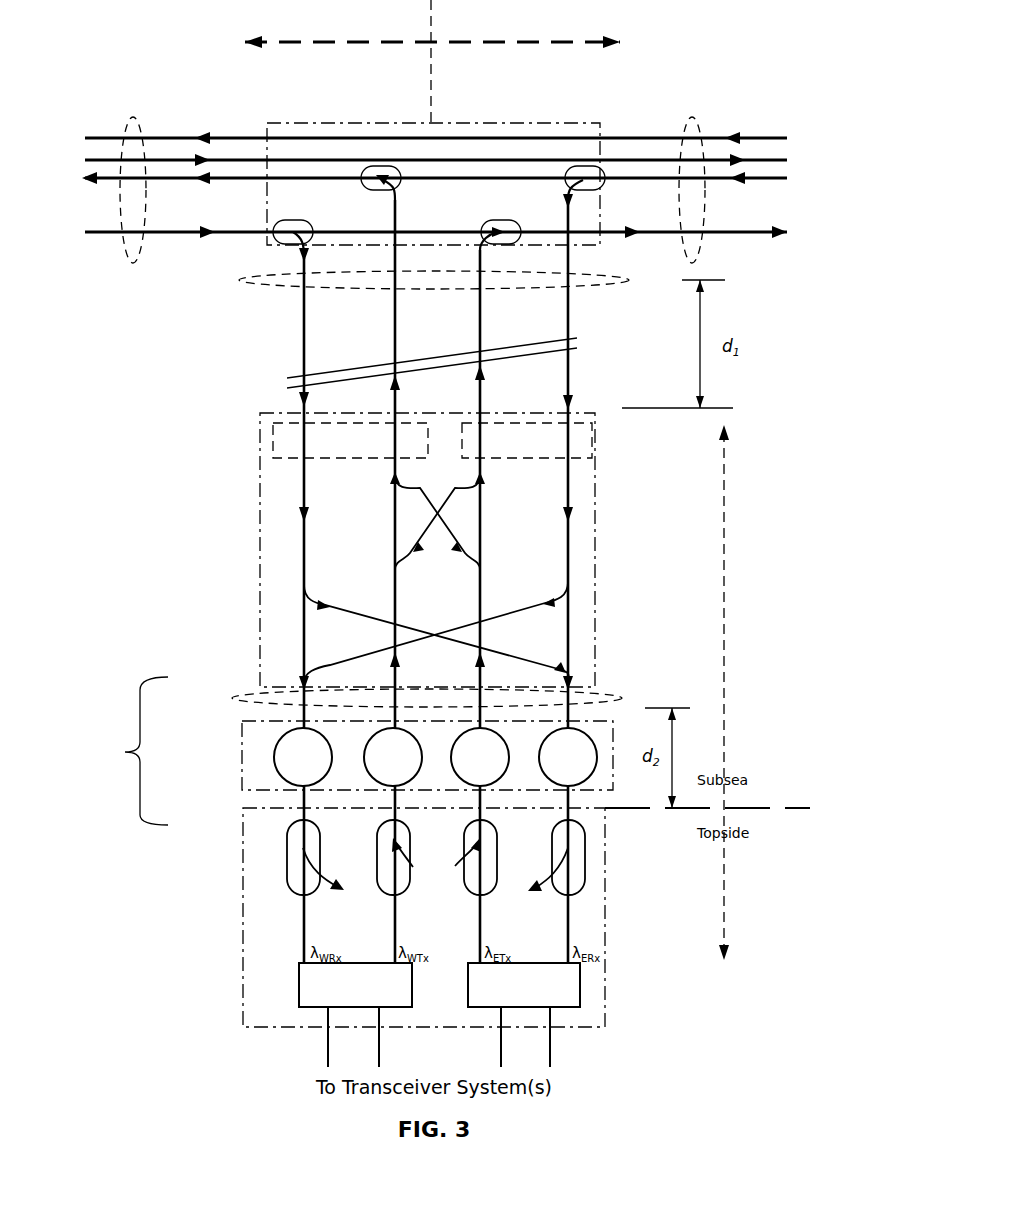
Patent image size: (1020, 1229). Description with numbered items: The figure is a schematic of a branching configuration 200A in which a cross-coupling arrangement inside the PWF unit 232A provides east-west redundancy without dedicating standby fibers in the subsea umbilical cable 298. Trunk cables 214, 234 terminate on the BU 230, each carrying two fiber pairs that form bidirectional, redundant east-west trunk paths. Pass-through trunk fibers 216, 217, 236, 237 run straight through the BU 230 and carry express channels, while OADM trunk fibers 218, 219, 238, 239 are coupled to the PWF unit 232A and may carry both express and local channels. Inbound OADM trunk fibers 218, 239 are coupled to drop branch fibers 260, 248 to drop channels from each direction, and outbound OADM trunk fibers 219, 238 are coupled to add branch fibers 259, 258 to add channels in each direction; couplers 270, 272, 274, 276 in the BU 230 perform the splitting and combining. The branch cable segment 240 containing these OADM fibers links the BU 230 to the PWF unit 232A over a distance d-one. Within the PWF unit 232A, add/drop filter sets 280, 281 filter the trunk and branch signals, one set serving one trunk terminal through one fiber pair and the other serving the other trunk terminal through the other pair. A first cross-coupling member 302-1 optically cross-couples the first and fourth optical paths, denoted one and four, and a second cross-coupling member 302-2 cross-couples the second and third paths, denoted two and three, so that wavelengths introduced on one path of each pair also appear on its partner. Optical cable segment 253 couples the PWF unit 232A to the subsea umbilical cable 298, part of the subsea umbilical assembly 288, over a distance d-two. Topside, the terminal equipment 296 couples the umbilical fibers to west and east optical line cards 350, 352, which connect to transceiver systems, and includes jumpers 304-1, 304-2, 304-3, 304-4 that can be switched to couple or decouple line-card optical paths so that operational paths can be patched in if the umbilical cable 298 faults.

The branching configuration 200A is at (185, 58).
The trunk cable 214 is at (133, 117).
The pass-through trunk fiber 216 is at (100, 138).
The pass-through trunk fiber 217 is at (100, 160).
The outbound OADM trunk fiber 219 is at (112, 180).
The inbound OADM trunk fiber 218 is at (112, 234).
The branching unit 230 is at (267, 123).
The trunk cable 234 is at (692, 118).
The pass-through trunk fiber 236 is at (760, 137).
The pass-through trunk fiber 237 is at (780, 160).
The inbound OADM trunk fiber 239 is at (765, 180).
The outbound OADM trunk fiber 238 is at (740, 234).
The coupler 270 is at (300, 222).
The coupler 272 is at (390, 185).
The coupler 274 is at (497, 225).
The coupler 276 is at (590, 185).
The branch cable segment 240 is at (245, 282).
The drop branch fiber 260 is at (304, 328).
The add branch fiber 259 is at (395, 320).
The add branch fiber 258 is at (480, 328).
The drop branch fiber 248 is at (568, 318).
The PWF unit 232A is at (262, 612).
The add/drop filter set 280 is at (350, 440).
The add/drop filter set 281 is at (527, 440).
The second cross-coupling member 302-2 is at (418, 517).
The first cross-coupling member 302-1 is at (432, 620).
The optical cable segment 253 is at (242, 698).
The subsea umbilical cable 298 is at (242, 722).
The subsea umbilical assembly 288 is at (111, 751).
The jumper 304-1 is at (290, 848).
The jumper 304-2 is at (410, 850).
The jumper 304-3 is at (498, 850).
The jumper 304-4 is at (585, 883).
The terminal equipment 296 is at (243, 915).
The west optical line card 350 is at (355, 1015).
The east optical line card 352 is at (524, 1015).